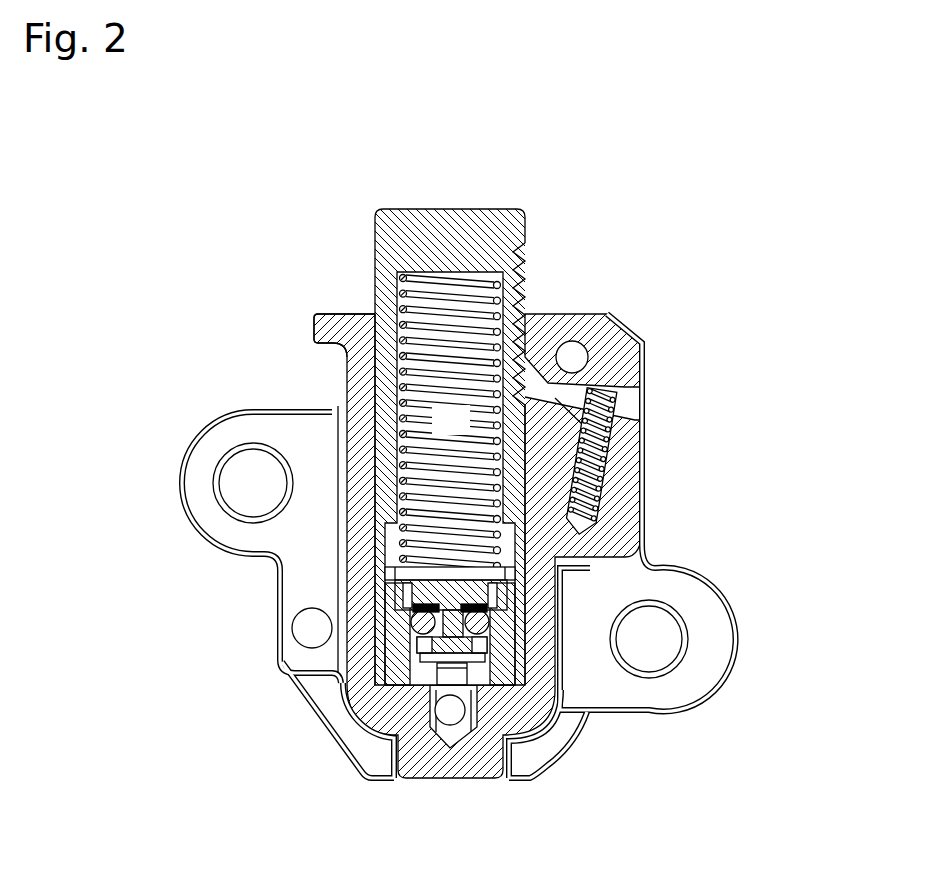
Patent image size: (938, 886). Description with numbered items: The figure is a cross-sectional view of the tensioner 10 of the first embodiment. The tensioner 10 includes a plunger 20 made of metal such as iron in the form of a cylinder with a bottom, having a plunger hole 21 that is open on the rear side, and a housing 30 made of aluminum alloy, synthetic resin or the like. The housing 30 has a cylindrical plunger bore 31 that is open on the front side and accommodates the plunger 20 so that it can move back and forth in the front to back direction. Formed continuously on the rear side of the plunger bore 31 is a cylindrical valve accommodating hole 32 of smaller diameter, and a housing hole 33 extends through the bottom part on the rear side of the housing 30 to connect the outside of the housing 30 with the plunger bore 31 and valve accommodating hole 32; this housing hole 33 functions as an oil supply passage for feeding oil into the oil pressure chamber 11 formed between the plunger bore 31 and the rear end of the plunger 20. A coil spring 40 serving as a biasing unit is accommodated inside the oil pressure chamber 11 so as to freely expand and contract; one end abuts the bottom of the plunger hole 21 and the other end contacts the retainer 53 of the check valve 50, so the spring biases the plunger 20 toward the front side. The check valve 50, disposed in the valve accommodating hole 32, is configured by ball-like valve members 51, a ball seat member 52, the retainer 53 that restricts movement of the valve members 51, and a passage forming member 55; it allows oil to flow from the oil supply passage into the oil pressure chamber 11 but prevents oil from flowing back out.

The tensioner 10 is at (224, 180).
The oil pressure chamber 11 is at (466, 432).
The plunger 20 is at (535, 386).
The plunger hole 21 is at (380, 318).
The housing 30 is at (494, 554).
The plunger bore 31 is at (377, 387).
The valve accommodating hole 32 is at (335, 697).
The housing hole 33 is at (447, 715).
The coil spring 40 is at (515, 290).
The check valve 50 is at (624, 585).
The valve members 51 is at (500, 606).
The ball seat member 52 is at (503, 643).
The retainer 53 is at (507, 580).
The passage forming member 55 is at (480, 665).